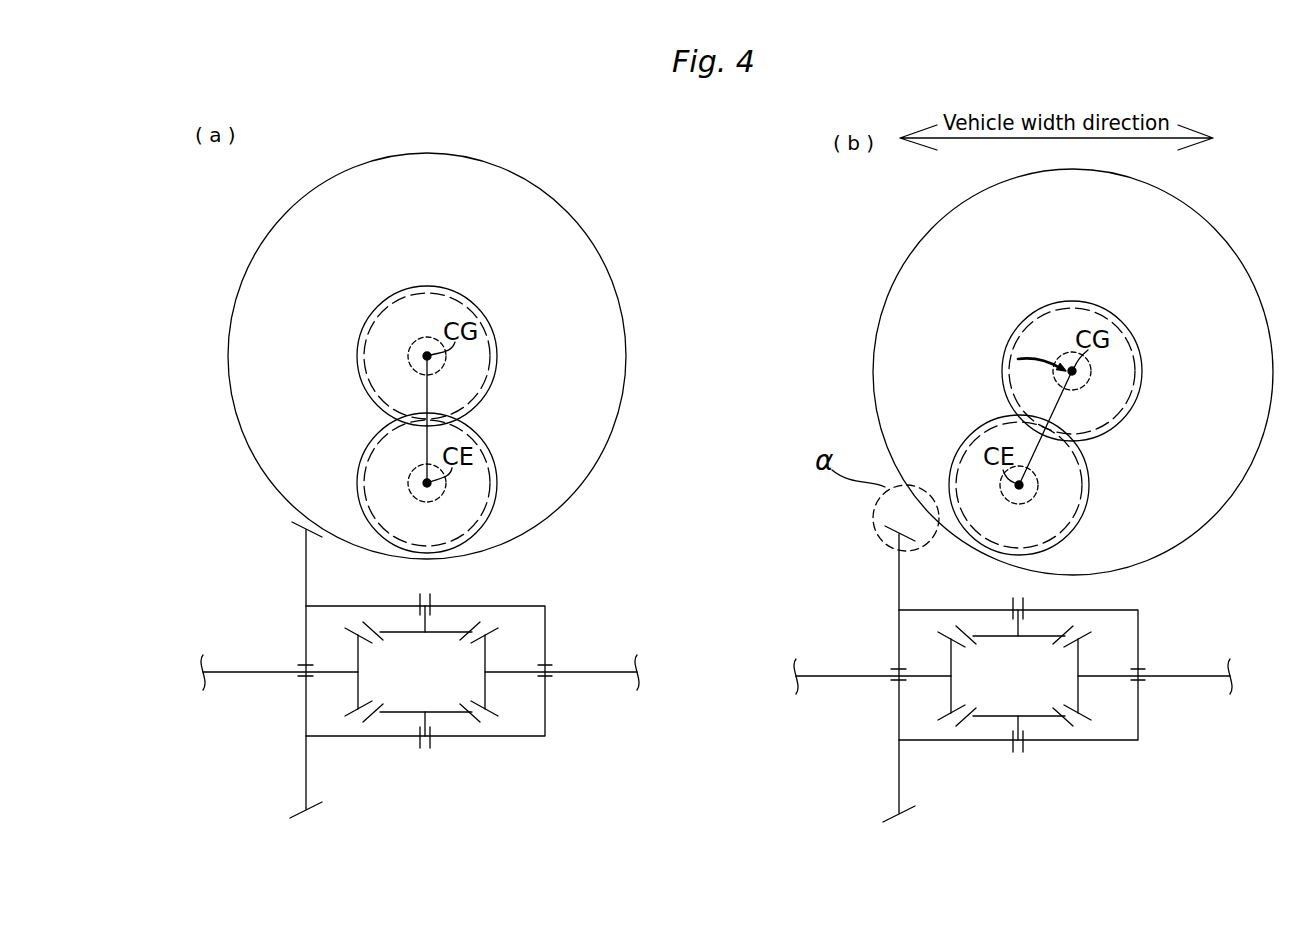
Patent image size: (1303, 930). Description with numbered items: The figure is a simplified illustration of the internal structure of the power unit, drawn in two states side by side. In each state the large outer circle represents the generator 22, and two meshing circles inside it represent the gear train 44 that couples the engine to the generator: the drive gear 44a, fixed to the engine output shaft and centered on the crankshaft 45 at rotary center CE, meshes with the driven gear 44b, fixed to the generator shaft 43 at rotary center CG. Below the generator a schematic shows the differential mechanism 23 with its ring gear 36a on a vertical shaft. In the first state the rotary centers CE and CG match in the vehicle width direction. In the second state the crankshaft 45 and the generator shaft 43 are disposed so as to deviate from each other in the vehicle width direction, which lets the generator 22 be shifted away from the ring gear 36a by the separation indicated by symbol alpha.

The generator 22 is at (547, 192).
The differential mechanism 23 is at (575, 627).
The ring gear 36a is at (292, 523).
The generator shaft 43 is at (421, 337).
The gear train 44 is at (805, 400).
The drive gear 44a is at (497, 468).
The driven gear 44b is at (499, 357).
The crankshaft 45 is at (413, 497).